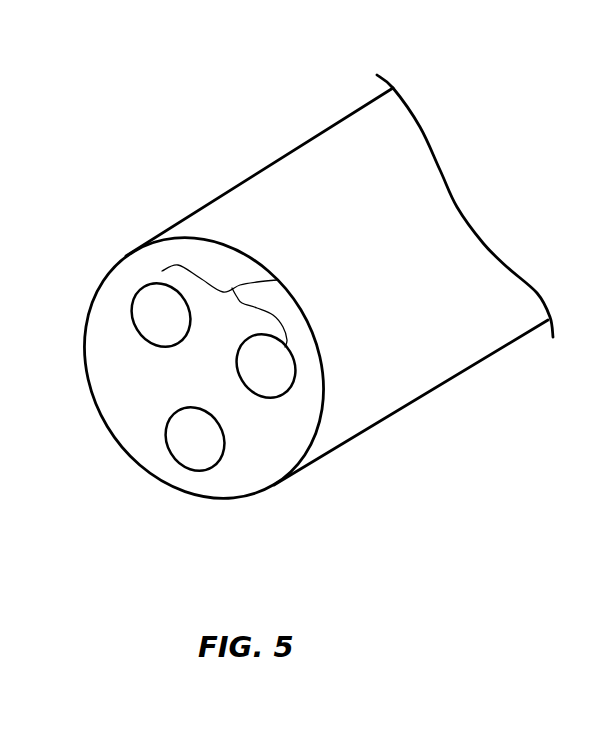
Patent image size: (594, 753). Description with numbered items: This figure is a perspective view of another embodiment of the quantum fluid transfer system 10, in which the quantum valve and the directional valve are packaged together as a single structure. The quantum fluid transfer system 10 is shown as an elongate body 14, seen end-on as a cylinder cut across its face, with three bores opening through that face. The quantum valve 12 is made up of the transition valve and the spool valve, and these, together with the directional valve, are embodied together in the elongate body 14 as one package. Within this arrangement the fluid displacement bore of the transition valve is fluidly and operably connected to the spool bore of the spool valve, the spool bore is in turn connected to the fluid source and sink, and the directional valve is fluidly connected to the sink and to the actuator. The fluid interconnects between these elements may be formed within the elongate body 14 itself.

The quantum fluid transfer system 10 is at (295, 312).
The elongate body 14 is at (280, 190).
The quantum valve 12 is at (277, 280).